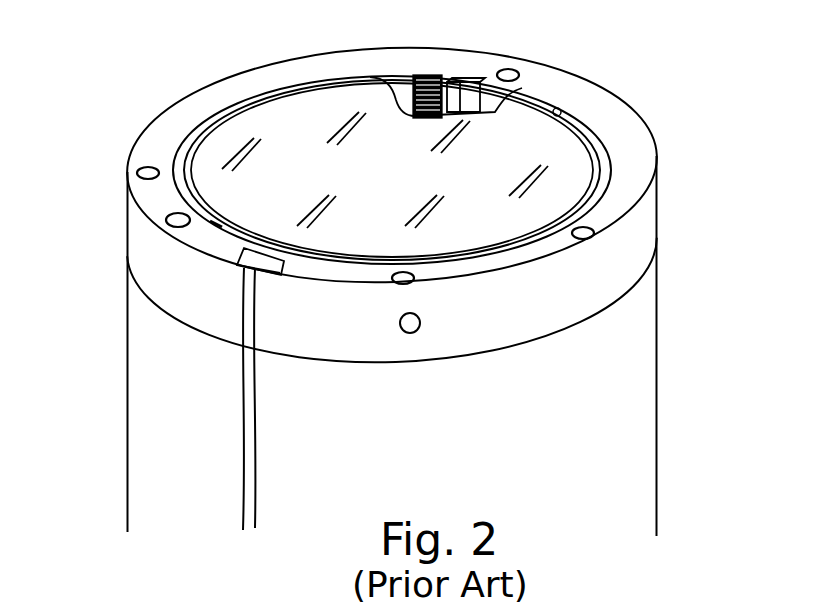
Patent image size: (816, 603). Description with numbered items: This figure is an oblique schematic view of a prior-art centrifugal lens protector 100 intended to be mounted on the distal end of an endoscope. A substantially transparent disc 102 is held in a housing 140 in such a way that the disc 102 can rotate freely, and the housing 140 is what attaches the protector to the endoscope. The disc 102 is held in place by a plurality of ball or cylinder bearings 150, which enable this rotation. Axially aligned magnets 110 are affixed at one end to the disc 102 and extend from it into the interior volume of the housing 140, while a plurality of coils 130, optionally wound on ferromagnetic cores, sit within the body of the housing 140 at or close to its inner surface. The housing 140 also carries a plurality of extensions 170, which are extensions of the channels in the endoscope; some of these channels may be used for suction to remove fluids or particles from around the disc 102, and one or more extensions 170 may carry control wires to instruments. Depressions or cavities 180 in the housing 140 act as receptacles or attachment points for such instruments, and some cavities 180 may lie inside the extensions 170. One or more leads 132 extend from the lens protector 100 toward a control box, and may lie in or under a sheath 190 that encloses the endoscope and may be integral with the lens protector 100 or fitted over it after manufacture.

The centrifugal lens protector 100 is at (80, 86).
The substantially transparent disc 102 is at (407, 178).
The magnet 110 is at (457, 88).
The coil 130 is at (404, 85).
The lead 132 is at (258, 461).
The housing 140 is at (638, 253).
The bearing 150 is at (553, 114).
The extension 170 is at (137, 170).
The cavity 180 is at (177, 216).
The sheath 190 is at (658, 507).